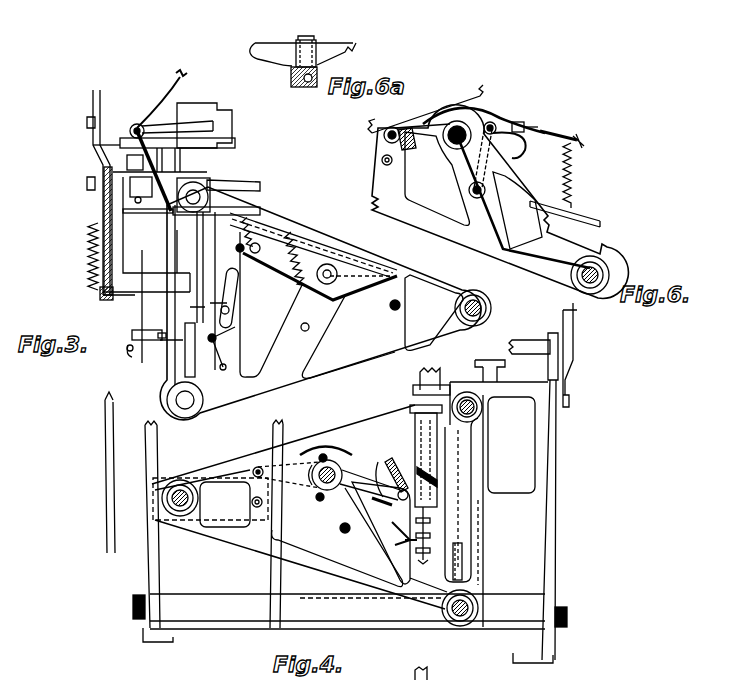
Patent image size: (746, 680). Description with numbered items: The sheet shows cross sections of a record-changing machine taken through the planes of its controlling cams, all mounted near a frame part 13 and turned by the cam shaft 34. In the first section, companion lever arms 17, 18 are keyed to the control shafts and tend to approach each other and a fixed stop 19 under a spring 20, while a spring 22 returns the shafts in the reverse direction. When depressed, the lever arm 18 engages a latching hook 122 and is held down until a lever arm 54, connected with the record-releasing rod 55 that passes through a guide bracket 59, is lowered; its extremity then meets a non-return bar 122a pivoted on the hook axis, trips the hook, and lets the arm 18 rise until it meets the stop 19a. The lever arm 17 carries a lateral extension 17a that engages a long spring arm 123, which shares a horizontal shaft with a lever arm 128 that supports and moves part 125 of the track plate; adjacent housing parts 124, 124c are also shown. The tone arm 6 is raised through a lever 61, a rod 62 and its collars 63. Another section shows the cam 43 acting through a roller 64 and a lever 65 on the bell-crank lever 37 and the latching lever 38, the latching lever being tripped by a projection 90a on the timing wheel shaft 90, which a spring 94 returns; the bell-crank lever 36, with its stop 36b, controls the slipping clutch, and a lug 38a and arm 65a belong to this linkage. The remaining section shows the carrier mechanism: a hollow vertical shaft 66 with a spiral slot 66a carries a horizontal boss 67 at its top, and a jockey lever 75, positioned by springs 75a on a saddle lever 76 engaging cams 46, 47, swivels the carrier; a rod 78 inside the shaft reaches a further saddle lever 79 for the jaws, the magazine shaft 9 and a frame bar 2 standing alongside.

In FIG. 4, the frame bar 2 is at (104, 459).
In FIG. 3, the tone arm 6 is at (164, 95).
In FIG. 4, the magazine shaft 9 is at (527, 340).
In FIG. 6, the machine frame part 13 is at (455, 215).
In FIG. 3, the machine frame part 13 is at (318, 341).
In FIG. 4, the machine frame part 13 is at (335, 541).
In FIG. 3, the companion lever arm 17 is at (270, 224).
In FIG. 3, the lateral extension 17a is at (168, 215).
In FIG. 3, the companion lever arm 18 is at (368, 291).
In FIG. 3, the fixed stop 19 is at (372, 277).
In FIG. 3, the stop 19a is at (263, 248).
In FIG. 3, the spring 20 is at (243, 233).
In FIG. 3, the spring 22 is at (286, 272).
In FIG. 3, the cam shaft 34 is at (329, 264).
In FIG. 6, the bell-crank lever 36 is at (530, 126).
In FIG. 6, the stop block 36b is at (520, 120).
In FIG. 6A, the bell-crank lever 37 is at (300, 87).
In FIG. 6, the bell-crank lever 37 is at (408, 150).
In FIG. 6A, the latching lever 38 is at (267, 43).
In FIG. 6, the latching lever 38 is at (396, 129).
In FIG. 6A, the lug 38a is at (290, 68).
In FIG. 6, the cam 43 is at (461, 108).
In FIG. 4, the cam 46 is at (355, 491).
In FIG. 4, the cam 47 is at (328, 491).
In FIG. 3, the lever arm 54 is at (185, 345).
In FIG. 4, the lever arm 54 is at (463, 552).
In FIG. 4, the rod 55 is at (460, 463).
In FIG. 3, the guide bracket 59 is at (252, 186).
In FIG. 6, the lever 61 is at (592, 218).
In FIG. 3, the lever 61 is at (147, 336).
In FIG. 3, the rod 62 is at (138, 301).
In FIG. 3, the collars 63 is at (128, 351).
In FIG. 6, the roller 64 is at (488, 121).
In FIG. 6, the lever 65 is at (486, 180).
In FIG. 6, the arm 65a is at (507, 205).
In FIG. 4, the hollow vertical shaft 66 is at (413, 416).
In FIG. 4, the spiral slot 66a is at (440, 479).
In FIG. 4, the horizontal boss 67 is at (437, 372).
In FIG. 4, the jockey lever 75 is at (400, 460).
In FIG. 4, the springs 75a is at (378, 461).
In FIG. 4, the saddle lever 76 is at (341, 447).
In FIG. 4, the rod 78 is at (421, 546).
In FIG. 4, the saddle lever 79 is at (398, 545).
In FIG. 6, the timing wheel shaft 90 is at (562, 146).
In FIG. 6, the projection 90a is at (568, 132).
In FIG. 6, the spring 94 is at (573, 178).
In FIG. 3, the latching hook 122 is at (230, 302).
In FIG. 3, the non-return bar 122a is at (222, 326).
In FIG. 3, the spring arm 123 is at (139, 179).
In FIG. 3, the housing 124 is at (202, 108).
In FIG. 3, the plate 124c is at (200, 150).
In FIG. 3, the track plate part 125 is at (175, 118).
In FIG. 3, the lever arm 128 is at (133, 125).